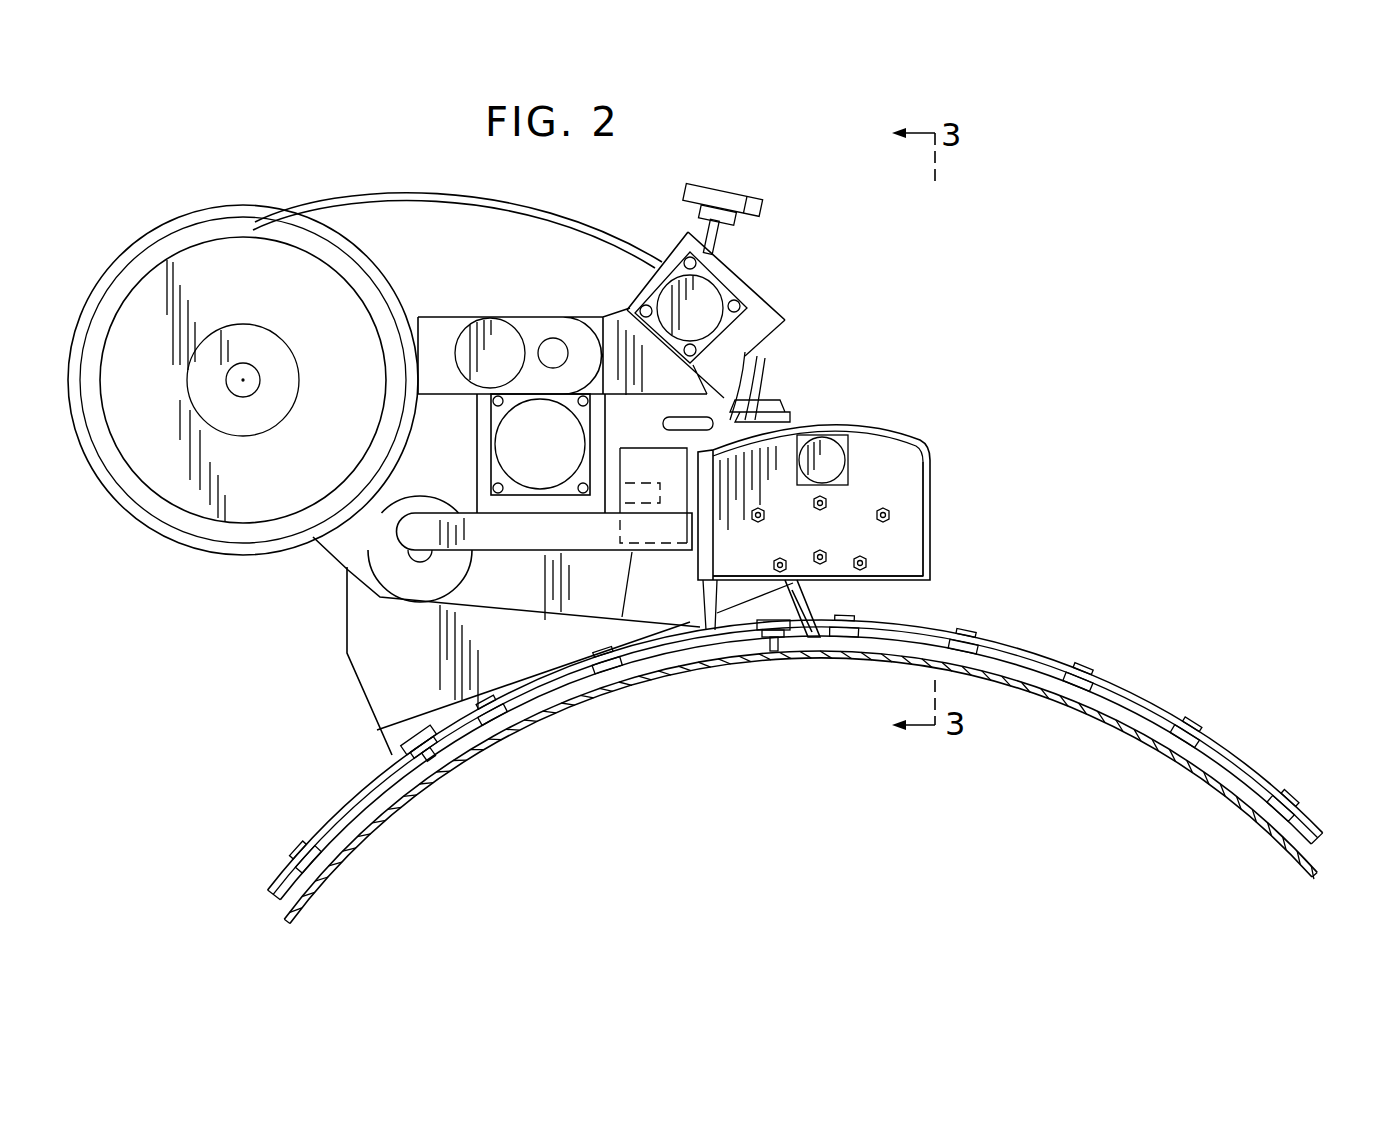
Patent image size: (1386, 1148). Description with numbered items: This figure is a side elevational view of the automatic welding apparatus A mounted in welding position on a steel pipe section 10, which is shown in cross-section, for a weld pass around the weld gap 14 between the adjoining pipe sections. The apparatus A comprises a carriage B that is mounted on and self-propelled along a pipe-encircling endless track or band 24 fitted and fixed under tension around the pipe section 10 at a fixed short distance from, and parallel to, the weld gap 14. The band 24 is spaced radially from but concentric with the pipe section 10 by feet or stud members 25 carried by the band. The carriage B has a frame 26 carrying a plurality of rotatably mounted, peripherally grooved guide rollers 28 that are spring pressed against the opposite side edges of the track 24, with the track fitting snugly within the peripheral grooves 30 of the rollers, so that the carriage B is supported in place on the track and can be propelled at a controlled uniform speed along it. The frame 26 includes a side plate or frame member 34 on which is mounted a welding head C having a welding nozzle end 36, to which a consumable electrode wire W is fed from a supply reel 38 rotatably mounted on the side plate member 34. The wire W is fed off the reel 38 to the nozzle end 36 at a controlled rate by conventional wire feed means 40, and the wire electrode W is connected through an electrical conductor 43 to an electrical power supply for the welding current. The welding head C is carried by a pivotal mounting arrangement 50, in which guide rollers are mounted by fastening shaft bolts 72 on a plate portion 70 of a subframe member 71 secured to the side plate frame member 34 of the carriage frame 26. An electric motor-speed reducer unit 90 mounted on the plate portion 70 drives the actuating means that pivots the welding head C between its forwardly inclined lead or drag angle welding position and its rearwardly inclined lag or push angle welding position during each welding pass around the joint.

The pipe section 10 is at (1200, 748).
The weld gap 14 is at (992, 672).
The endless track or band 24 is at (335, 820).
The feet or stud members 25 is at (1168, 727).
The frame 26 is at (390, 738).
The guide rollers 28 is at (423, 771).
The peripheral grooves 30 is at (447, 772).
The side plate or frame member 34 is at (338, 540).
The welding nozzle end 36 is at (812, 600).
The supply reel 38 is at (130, 320).
The wire feed means 40 is at (766, 288).
The electrical conductor 43 is at (740, 402).
The pivotal mounting arrangement 50 is at (943, 465).
The plate portion 70 is at (913, 563).
The subframe member 71 is at (700, 562).
The fastening shaft bolts 72 is at (866, 562).
The electric motor-speed reducer unit 90 is at (838, 458).
The automatic welding apparatus A is at (846, 333).
The carriage B is at (326, 670).
The welding head C is at (834, 592).
The consumable electrode wire W is at (226, 223).